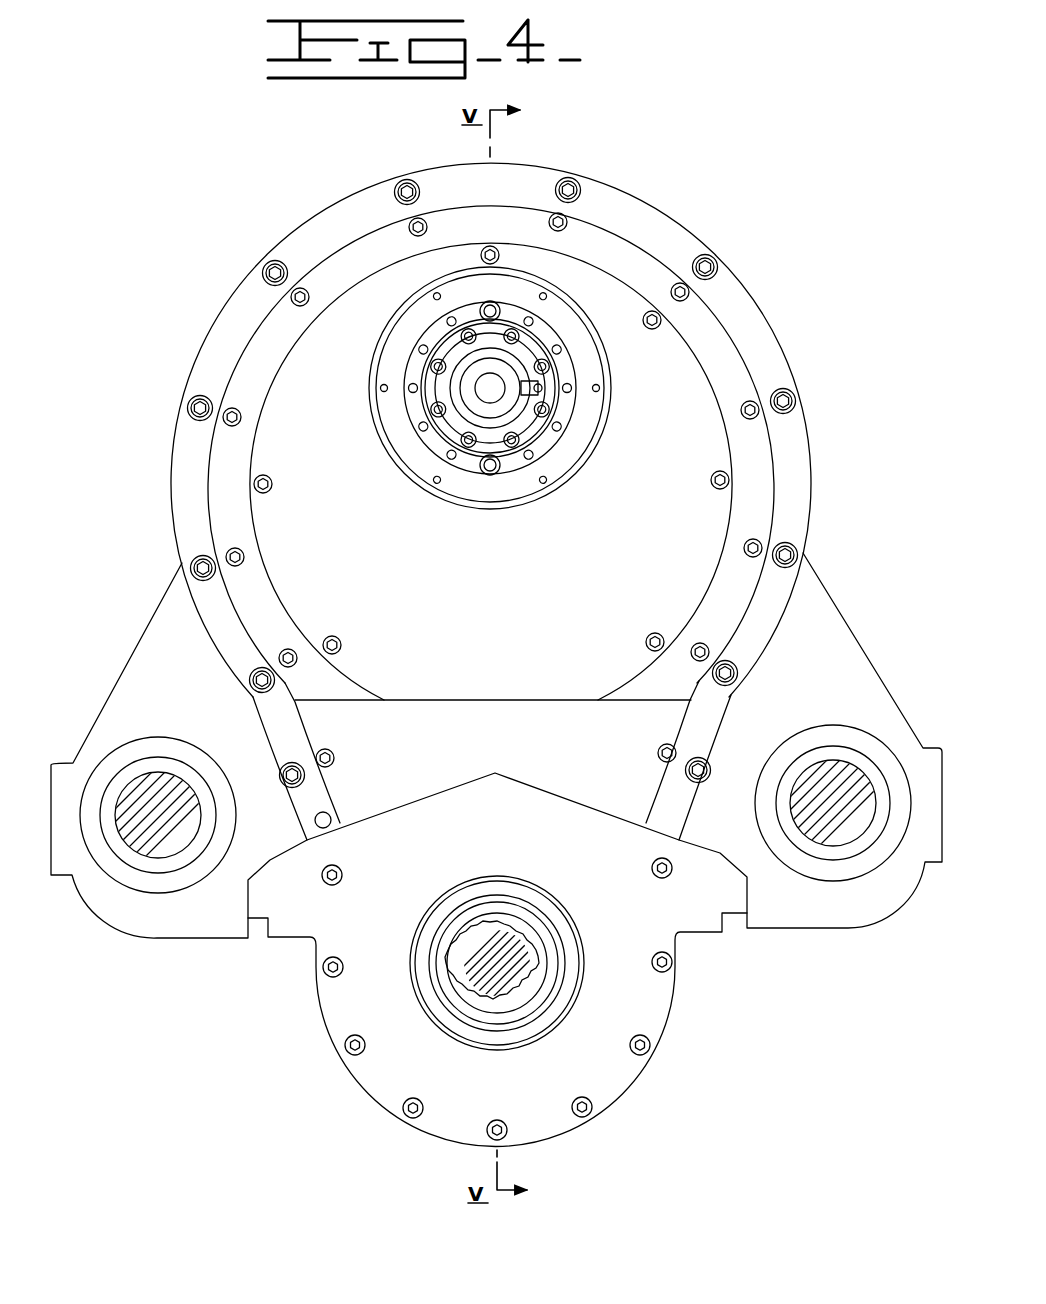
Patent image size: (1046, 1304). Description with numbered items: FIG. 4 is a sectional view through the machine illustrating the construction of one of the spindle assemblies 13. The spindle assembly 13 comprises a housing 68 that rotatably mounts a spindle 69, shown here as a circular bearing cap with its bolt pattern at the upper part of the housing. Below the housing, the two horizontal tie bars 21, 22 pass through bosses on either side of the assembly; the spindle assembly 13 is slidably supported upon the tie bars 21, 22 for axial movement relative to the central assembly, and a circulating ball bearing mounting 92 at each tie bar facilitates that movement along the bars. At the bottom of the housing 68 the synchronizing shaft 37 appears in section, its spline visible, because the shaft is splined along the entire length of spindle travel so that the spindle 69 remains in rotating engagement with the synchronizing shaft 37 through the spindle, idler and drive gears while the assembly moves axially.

The spindle assembly 13 is at (754, 249).
The housing 68 is at (798, 489).
The spindle 69 is at (576, 448).
The circulating ball bearing mounting 92 is at (171, 760).
The tie bar 21 is at (164, 851).
The tie bar 22 is at (837, 766).
The synchronizing shaft 37 is at (518, 950).